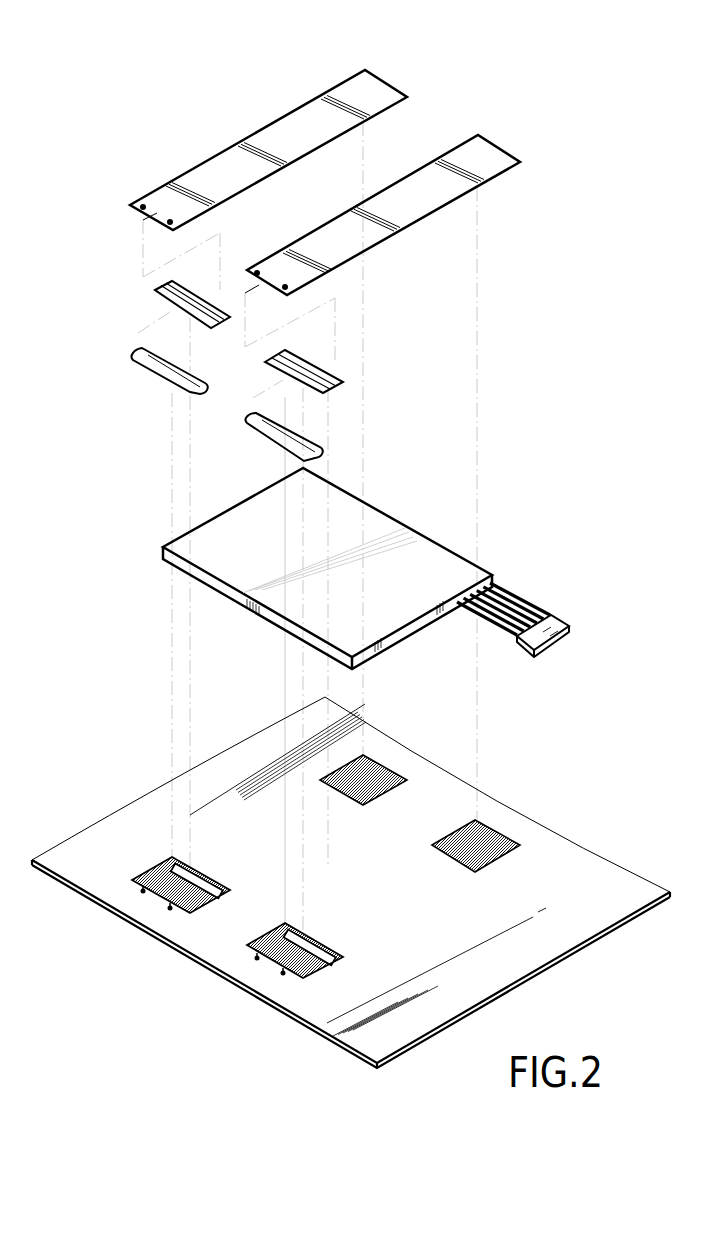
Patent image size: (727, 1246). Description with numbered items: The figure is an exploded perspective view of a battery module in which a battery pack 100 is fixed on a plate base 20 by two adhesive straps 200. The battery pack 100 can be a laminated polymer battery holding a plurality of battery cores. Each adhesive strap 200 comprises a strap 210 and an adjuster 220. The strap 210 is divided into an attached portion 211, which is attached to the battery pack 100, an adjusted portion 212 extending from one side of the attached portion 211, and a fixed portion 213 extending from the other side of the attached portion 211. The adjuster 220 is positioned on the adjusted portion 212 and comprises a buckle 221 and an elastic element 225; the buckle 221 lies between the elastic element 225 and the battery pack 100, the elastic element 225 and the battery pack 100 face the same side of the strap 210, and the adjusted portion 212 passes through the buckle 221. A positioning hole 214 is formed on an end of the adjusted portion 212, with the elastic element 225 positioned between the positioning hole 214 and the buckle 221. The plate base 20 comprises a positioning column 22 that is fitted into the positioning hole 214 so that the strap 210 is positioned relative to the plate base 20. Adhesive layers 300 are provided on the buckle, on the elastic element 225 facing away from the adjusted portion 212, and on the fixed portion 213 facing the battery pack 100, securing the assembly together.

The plate base 20 is at (607, 953).
The positioning column 22 is at (280, 972).
The battery pack 100 is at (400, 497).
The adhesive strap 200 is at (201, 28).
The strap 210 is at (318, 13).
The attached portion 211 is at (267, 147).
The adjusted portion 212 is at (165, 202).
The fixed portion 213 is at (352, 92).
The positioning hole 214 is at (283, 287).
The adjuster 220 is at (99, 141).
The buckle 221 is at (153, 295).
The elastic element 225 is at (133, 360).
The adhesive layer 300 is at (498, 828).